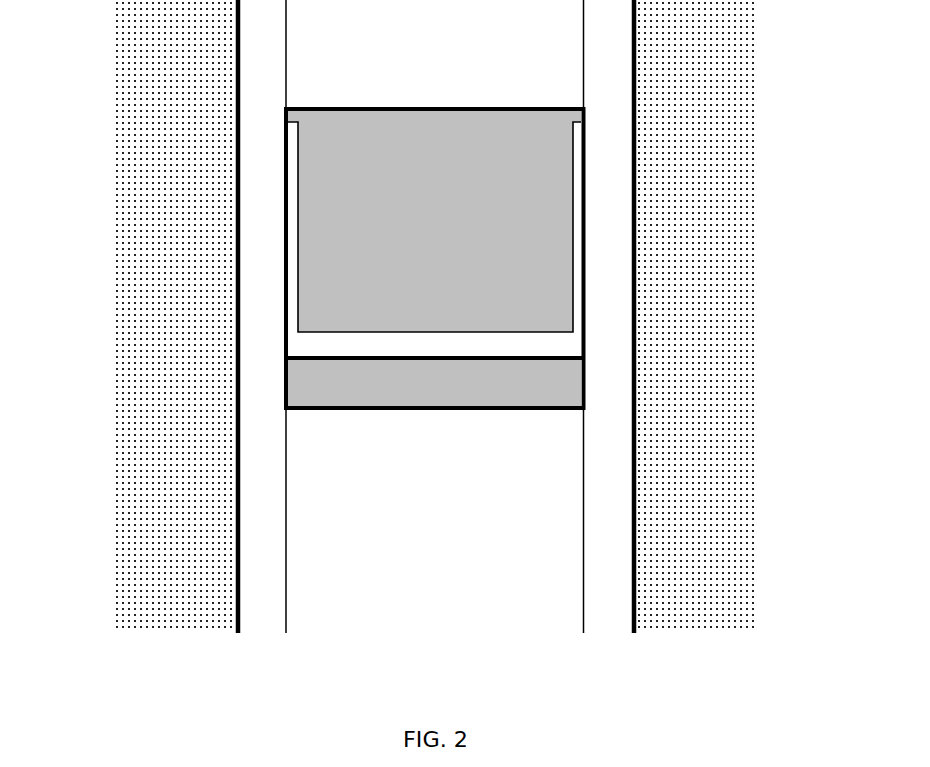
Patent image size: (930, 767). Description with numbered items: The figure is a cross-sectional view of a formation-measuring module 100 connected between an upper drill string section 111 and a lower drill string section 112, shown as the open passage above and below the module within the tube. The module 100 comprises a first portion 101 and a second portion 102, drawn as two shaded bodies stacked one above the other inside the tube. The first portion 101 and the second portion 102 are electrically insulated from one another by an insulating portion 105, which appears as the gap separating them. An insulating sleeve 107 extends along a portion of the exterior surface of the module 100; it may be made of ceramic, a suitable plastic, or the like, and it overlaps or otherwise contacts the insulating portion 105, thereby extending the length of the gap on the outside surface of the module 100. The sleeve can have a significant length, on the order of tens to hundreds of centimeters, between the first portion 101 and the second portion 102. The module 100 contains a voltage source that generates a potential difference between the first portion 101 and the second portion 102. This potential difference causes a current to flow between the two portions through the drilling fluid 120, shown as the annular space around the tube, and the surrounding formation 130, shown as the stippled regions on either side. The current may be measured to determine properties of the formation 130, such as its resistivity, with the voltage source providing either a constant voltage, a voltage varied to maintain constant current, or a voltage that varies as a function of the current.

The formation-measuring module 100 is at (434, 258).
The first portion 101 is at (538, 195).
The second portion 102 is at (538, 392).
The insulating portion 105 is at (547, 346).
The insulating sleeve 107 is at (577, 261).
The drill string section 111 is at (381, 48).
The drill string section 112 is at (392, 504).
The drilling fluid 120 is at (266, 261).
The formation 130 is at (186, 323).